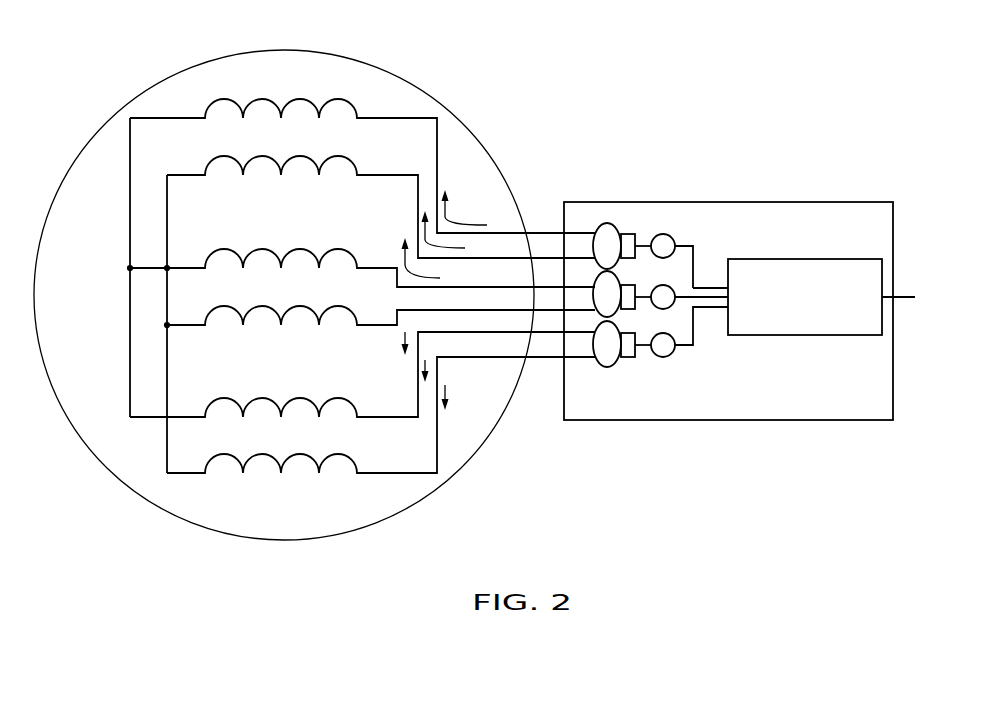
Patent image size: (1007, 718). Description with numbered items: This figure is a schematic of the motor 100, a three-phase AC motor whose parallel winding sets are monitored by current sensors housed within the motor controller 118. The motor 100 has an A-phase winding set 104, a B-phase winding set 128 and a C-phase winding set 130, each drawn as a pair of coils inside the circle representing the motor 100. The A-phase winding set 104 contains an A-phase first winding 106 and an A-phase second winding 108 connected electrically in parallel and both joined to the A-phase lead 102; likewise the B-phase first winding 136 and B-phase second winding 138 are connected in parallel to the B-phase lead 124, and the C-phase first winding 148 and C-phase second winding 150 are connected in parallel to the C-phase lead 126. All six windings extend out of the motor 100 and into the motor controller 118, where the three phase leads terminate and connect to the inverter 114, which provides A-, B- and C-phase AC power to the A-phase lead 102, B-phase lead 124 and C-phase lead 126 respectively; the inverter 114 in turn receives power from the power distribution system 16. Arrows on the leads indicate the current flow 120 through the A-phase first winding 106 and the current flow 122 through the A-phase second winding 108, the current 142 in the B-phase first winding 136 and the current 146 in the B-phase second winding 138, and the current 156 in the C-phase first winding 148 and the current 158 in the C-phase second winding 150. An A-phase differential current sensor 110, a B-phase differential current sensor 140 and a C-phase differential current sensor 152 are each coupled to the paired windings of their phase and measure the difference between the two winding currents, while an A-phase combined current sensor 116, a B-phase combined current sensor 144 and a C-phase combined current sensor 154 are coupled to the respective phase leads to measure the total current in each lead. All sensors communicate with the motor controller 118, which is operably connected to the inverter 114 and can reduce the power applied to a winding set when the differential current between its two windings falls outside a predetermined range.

The motor 100 is at (127, 548).
The A-phase winding set 104 is at (292, 80).
The A-phase first winding 106 is at (355, 100).
The A-phase second winding 108 is at (360, 157).
The B-phase first winding 136 is at (205, 243).
The B-phase second winding 138 is at (212, 338).
The B-phase winding set 128 is at (212, 342).
The C-phase first winding 148 is at (306, 398).
The C-phase second winding 150 is at (296, 513).
The C-phase winding set 130 is at (263, 483).
The current flow through A-phase first winding 120 is at (452, 221).
The current flow through A-phase second winding 122 is at (423, 235).
The current flowing in B-phase first winding 142 is at (408, 278).
The current flowing through B-phase second winding 146 is at (400, 324).
The current flowing through C-phase first winding 156 is at (467, 344).
The current flowing through C-phase second winding 158 is at (485, 368).
The motor controller 118 is at (833, 421).
The A-phase differential current sensor 110 is at (587, 209).
The B-phase differential current sensor 140 is at (596, 268).
The C-phase differential current sensor 152 is at (594, 364).
The A-phase combined current sensor 116 is at (663, 234).
The C-phase combined current sensor 154 is at (656, 358).
The A-phase lead 102 is at (696, 262).
The B-phase lead 124 is at (727, 290).
The B-phase combined current sensor 144 is at (727, 297).
The C-phase lead 126 is at (697, 325).
The inverter 114 is at (843, 259).
The power distribution system 16 is at (895, 291).